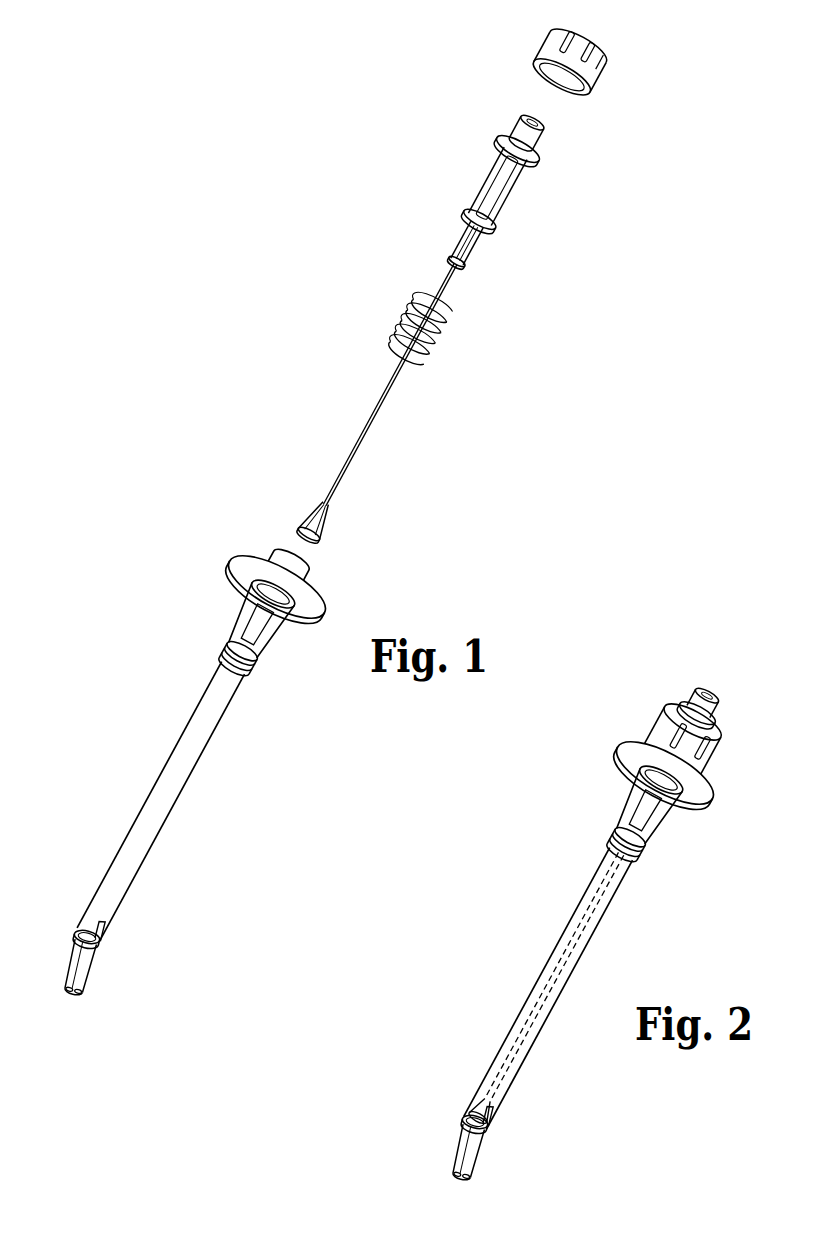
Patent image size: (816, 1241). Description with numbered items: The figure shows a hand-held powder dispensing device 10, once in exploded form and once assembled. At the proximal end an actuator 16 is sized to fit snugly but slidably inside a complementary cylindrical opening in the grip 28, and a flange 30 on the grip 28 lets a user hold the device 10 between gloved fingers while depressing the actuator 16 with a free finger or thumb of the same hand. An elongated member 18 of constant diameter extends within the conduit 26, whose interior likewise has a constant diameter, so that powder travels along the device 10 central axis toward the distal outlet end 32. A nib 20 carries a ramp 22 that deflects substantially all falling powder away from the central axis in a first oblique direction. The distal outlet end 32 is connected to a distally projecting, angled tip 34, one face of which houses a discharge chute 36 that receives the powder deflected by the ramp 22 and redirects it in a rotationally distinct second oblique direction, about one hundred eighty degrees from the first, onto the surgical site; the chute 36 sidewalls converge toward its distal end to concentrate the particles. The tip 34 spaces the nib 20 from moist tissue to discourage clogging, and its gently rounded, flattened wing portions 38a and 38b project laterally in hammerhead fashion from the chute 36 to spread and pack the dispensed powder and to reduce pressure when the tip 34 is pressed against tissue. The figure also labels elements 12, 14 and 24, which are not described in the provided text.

In FIG. 1, the device 10 is at (327, 338).
In FIG. 2, the device 10 is at (536, 872).
In FIG. 1, the cap 12 is at (600, 84).
In FIG. 2, the cap 12 is at (666, 726).
In FIG. 1, the plunger knob 14 is at (540, 118).
In FIG. 2, the plunger knob 14 is at (704, 700).
In FIG. 1, the actuator 16 is at (503, 207).
In FIG. 2, the actuator 16 is at (712, 728).
In FIG. 1, the elongated member 18 is at (445, 292).
In FIG. 2, the elongated member 18 is at (596, 910).
In FIG. 1, the nib 20 is at (309, 522).
In FIG. 2, the nib 20 is at (462, 1120).
In FIG. 1, the ramp 22 is at (318, 527).
In FIG. 2, the ramp 22 is at (488, 1093).
In FIG. 1, the spring 24 is at (413, 318).
In FIG. 1, the conduit 26 is at (178, 771).
In FIG. 2, the conduit 26 is at (542, 974).
In FIG. 1, the grip 28 is at (242, 617).
In FIG. 2, the grip 28 is at (632, 792).
In FIG. 1, the flange 30 is at (308, 618).
In FIG. 2, the flange 30 is at (697, 803).
In FIG. 1, the distal outlet end 32 is at (79, 932).
In FIG. 1, the tip 34 is at (91, 968).
In FIG. 2, the tip 34 is at (478, 1160).
In FIG. 1, the discharge chute 36 is at (72, 962).
In FIG. 2, the discharge chute 36 is at (466, 1148).
In FIG. 1, the wing portion 38a is at (62, 990).
In FIG. 2, the wing portion 38a is at (450, 1170).
In FIG. 1, the wing portion 38b is at (85, 995).
In FIG. 2, the wing portion 38b is at (473, 1183).